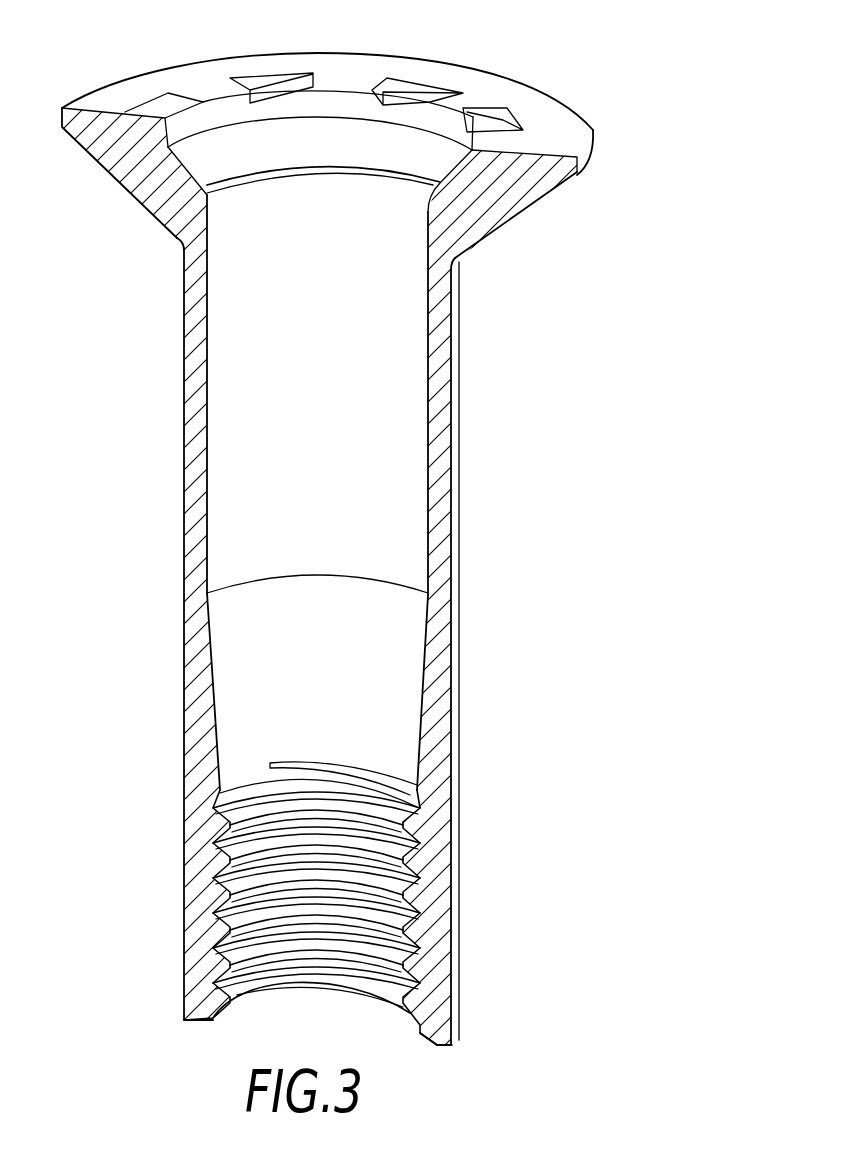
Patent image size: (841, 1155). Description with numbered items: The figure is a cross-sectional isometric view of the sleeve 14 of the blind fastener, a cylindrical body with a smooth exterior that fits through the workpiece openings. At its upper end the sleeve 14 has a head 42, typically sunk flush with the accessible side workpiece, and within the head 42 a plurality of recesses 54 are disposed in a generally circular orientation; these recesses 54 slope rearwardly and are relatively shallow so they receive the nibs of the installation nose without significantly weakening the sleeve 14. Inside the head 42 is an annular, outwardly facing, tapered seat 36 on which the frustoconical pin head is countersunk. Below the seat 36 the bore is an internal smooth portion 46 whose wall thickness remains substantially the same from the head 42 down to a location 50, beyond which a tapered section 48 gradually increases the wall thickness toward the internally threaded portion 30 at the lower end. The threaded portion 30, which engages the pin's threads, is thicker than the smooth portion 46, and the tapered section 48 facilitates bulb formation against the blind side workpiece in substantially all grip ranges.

The sleeve 14 is at (460, 347).
The internally threaded portion 30 is at (408, 903).
The seat 36 is at (437, 180).
The head 42 is at (100, 97).
The smooth portion 46 is at (408, 455).
The tapered section 48 is at (405, 668).
The location 50 is at (433, 598).
The recesses 54 is at (400, 85).